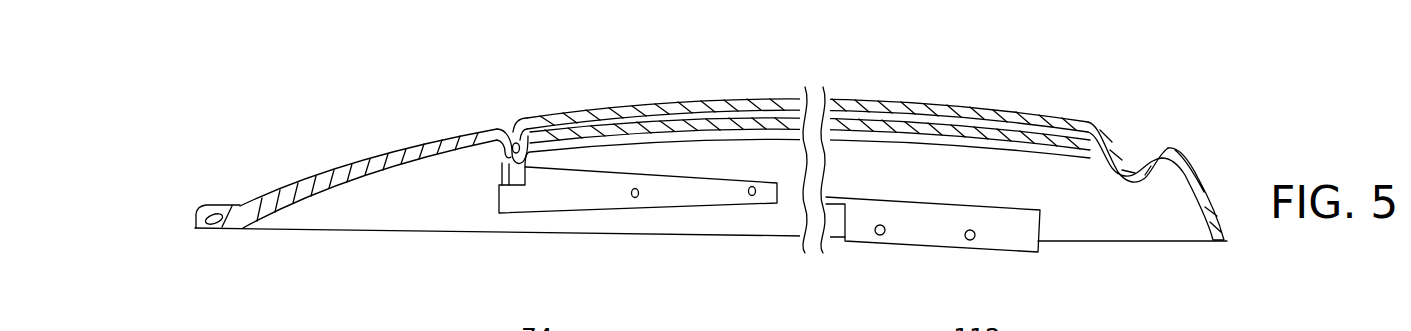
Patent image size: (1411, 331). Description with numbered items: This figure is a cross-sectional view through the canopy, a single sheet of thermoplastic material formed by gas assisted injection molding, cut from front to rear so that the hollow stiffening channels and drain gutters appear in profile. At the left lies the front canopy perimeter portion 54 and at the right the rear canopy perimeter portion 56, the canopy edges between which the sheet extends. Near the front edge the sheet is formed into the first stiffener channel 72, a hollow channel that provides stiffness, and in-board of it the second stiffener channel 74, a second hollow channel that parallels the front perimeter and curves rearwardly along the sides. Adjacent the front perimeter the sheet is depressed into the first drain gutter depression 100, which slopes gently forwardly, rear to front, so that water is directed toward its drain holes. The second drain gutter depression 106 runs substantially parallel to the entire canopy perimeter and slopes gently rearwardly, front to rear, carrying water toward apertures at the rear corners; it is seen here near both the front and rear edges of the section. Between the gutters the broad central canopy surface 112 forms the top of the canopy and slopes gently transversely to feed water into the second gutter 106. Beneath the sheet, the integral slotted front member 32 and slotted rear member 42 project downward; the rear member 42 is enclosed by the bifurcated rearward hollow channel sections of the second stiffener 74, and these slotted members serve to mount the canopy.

The slotted front member 32 is at (600, 198).
The slotted rear member 42 is at (922, 232).
The front canopy perimeter portion 54 is at (196, 220).
The rear canopy perimeter portion 56 is at (1228, 231).
The first stiffener channel 72 is at (212, 229).
The second stiffener channel 74 is at (517, 130).
The first drain gutter depression 100 is at (236, 208).
The second drain gutter depression 106 is at (507, 142).
The central canopy surface 112 is at (947, 102).